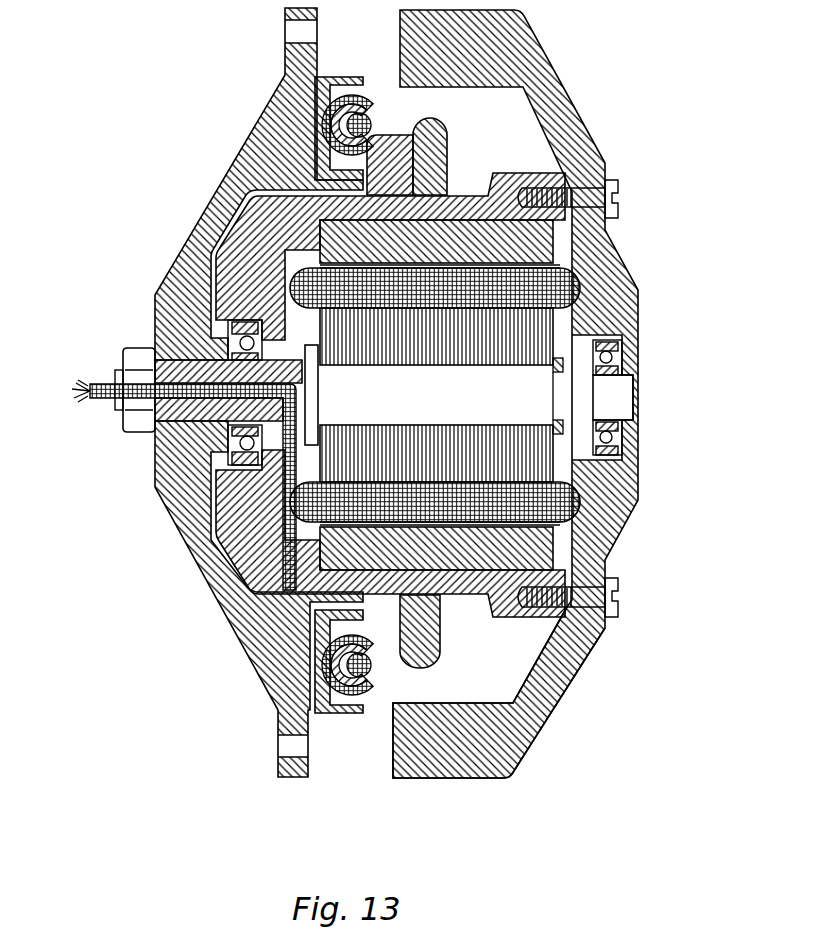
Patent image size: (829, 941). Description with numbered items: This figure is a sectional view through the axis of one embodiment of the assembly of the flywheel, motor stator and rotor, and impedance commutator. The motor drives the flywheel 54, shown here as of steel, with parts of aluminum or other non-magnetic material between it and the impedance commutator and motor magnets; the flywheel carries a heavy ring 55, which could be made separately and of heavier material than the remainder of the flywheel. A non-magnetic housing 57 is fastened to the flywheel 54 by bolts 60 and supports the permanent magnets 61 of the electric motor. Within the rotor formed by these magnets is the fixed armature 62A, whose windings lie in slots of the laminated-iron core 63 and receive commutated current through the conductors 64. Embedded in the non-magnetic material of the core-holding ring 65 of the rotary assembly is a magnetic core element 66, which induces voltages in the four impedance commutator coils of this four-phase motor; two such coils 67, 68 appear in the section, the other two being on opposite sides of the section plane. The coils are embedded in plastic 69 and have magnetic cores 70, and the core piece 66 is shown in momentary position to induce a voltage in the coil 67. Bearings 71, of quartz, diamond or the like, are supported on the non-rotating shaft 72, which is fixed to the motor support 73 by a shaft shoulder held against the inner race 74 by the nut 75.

The flywheel 54 is at (578, 100).
The heavy ring 55 is at (490, 768).
The non-magnetic housing 57 is at (495, 612).
The bolts 60 is at (613, 186).
The permanent magnets 61 is at (543, 245).
The fixed armature 62A is at (580, 292).
The laminated-iron core 63 is at (352, 336).
The conductors 64 is at (74, 404).
The core-holding ring 65 is at (437, 122).
The magnetic core element 66 is at (410, 167).
The impedance commutator coil 67 is at (377, 88).
The impedance commutator coil 68 is at (369, 692).
The plastic 69 is at (327, 83).
The magnetic cores 70 is at (396, 670).
The bearings 71 is at (230, 338).
The non-rotating shaft 72 is at (469, 395).
The motor support 73 is at (228, 580).
The inner race 74 is at (238, 427).
The nut 75 is at (136, 382).